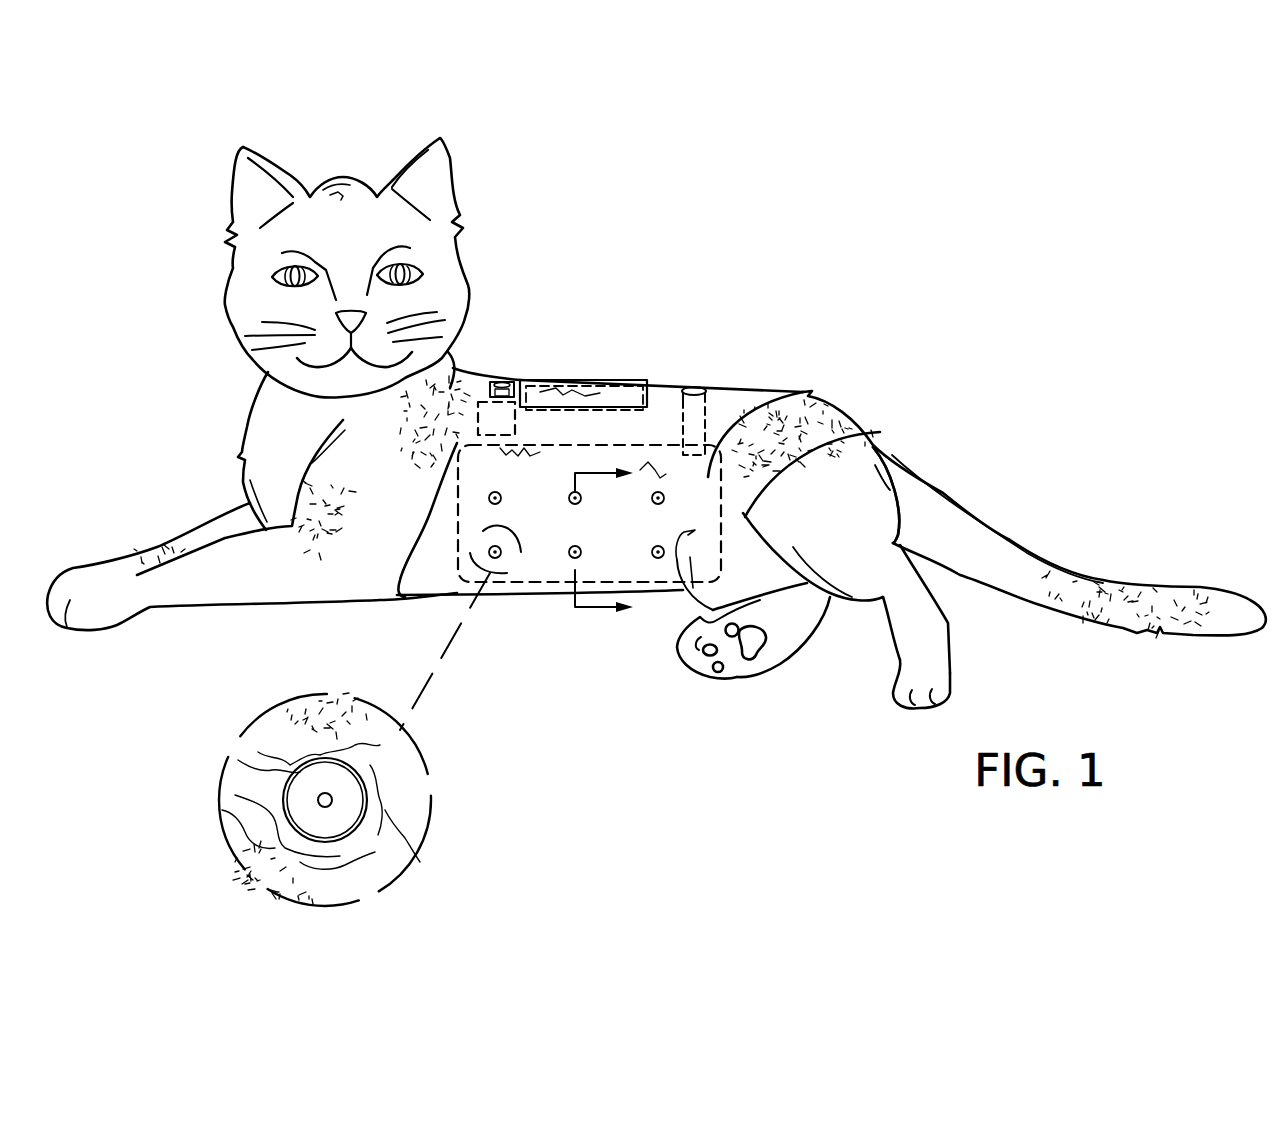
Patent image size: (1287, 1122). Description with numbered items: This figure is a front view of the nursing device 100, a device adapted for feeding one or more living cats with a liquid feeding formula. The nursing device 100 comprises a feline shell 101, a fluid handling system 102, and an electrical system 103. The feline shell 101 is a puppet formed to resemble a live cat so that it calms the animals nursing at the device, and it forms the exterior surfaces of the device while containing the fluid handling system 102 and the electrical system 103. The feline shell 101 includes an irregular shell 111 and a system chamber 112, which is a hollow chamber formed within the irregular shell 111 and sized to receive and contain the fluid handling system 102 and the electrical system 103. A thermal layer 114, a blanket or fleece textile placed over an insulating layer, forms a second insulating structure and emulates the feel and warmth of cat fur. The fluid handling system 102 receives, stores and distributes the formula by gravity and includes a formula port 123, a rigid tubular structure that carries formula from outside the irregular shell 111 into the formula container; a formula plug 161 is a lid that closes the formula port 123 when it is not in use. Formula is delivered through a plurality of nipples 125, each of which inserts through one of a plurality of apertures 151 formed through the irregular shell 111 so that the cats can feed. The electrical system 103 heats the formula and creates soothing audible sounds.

The nursing device 100 is at (124, 117).
The feline shell 101 is at (472, 273).
The fluid handling system 102 is at (858, 443).
The electrical system 103 is at (545, 380).
The irregular shell 111 is at (873, 497).
The system chamber 112 is at (753, 397).
The thermal layer 114 is at (382, 810).
The formula port 123 is at (652, 396).
The plurality of nipples 125 is at (330, 798).
The plurality of apertures 151 is at (353, 769).
The formula plug 161 is at (694, 386).